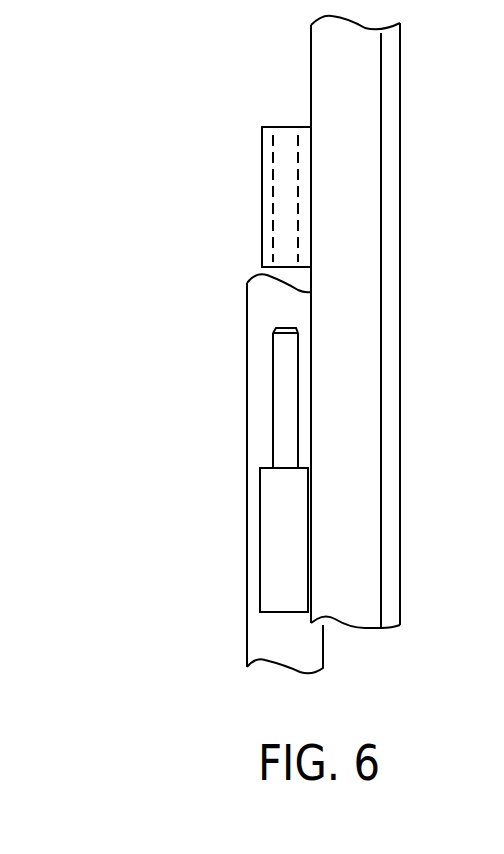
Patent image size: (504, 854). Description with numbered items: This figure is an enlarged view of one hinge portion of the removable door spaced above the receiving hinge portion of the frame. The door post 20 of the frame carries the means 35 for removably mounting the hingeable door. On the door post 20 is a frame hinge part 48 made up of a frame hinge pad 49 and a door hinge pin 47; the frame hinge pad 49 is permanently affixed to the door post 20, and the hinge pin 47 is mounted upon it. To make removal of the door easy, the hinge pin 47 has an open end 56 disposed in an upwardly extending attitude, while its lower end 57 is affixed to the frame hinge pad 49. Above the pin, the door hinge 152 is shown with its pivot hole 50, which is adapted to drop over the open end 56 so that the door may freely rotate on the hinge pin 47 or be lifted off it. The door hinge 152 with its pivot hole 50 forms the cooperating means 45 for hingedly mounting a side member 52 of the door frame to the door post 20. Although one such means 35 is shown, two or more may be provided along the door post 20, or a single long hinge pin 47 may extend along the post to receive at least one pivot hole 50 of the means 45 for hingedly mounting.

The door post 20 is at (277, 647).
The means for removably mounting 35 is at (158, 130).
The means for hingedly mounting 45 is at (223, 123).
The door hinge pin 47 is at (285, 390).
The frame hinge part 48 is at (258, 497).
The frame hinge pad 49 is at (252, 582).
The pivot hole 50 is at (283, 126).
The side member 52 is at (388, 522).
The open end 56 is at (275, 330).
The lower end 57 is at (285, 533).
The door hinge 152 is at (262, 182).